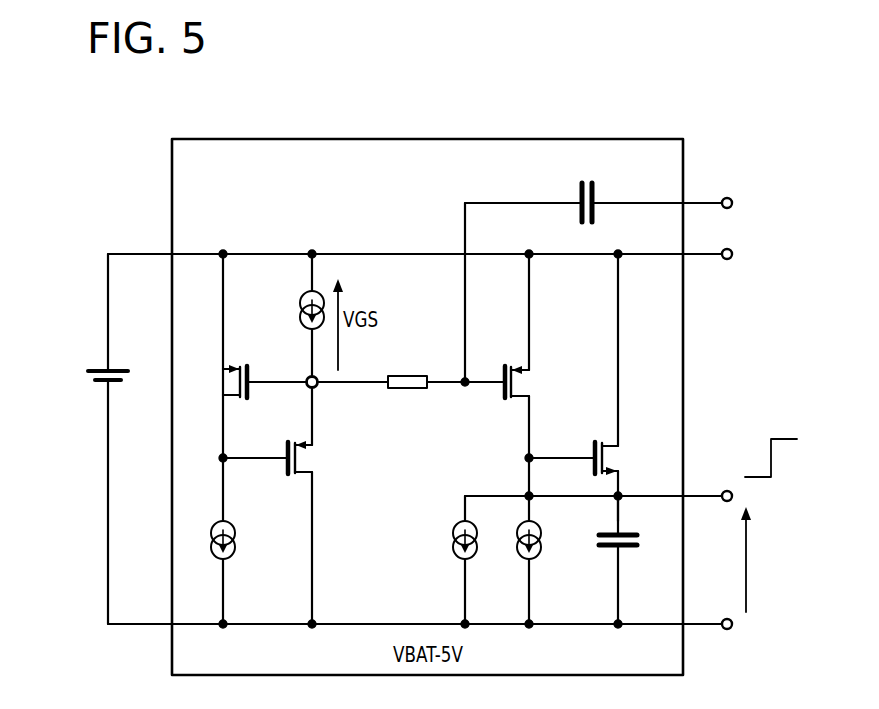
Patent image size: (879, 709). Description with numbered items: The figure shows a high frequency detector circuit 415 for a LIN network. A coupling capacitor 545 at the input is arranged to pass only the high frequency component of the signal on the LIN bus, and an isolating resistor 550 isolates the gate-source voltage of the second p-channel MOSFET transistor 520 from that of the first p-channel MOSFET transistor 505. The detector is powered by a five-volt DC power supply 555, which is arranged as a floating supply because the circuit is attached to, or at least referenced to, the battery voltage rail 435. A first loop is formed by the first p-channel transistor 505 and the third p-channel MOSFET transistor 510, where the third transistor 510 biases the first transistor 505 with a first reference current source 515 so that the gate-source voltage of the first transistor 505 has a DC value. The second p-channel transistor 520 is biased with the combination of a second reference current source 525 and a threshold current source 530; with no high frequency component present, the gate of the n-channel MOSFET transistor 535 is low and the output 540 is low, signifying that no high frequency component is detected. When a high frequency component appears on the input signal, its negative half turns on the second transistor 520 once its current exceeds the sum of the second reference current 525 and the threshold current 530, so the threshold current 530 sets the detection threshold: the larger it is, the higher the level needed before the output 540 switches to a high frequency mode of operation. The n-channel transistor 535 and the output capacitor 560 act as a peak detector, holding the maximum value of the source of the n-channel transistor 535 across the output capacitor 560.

The high frequency detector circuit 415 is at (580, 103).
The Vbat 435 is at (334, 253).
The MOSFET transistor MP1 505 is at (249, 365).
The MOSFET transistor MP3 510 is at (287, 441).
The Iref 515 is at (229, 559).
The MOSFET transistor MP2 520 is at (497, 202).
The Iref 525 is at (535, 559).
The Ith 530 is at (471, 559).
The MOSFET transistor Mn1 535 is at (595, 441).
The output 540 is at (721, 496).
The capacitor C 545 is at (595, 212).
The resistor R 550 is at (410, 388).
The DC 5V power supply 555 is at (92, 367).
The capacitor C2 560 is at (630, 548).